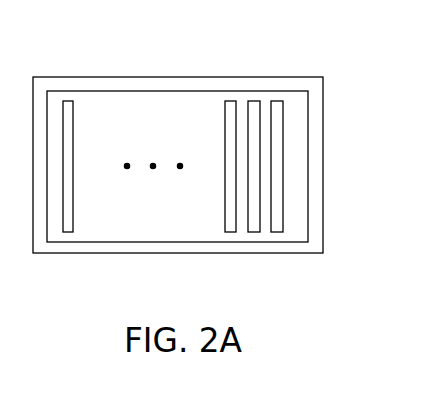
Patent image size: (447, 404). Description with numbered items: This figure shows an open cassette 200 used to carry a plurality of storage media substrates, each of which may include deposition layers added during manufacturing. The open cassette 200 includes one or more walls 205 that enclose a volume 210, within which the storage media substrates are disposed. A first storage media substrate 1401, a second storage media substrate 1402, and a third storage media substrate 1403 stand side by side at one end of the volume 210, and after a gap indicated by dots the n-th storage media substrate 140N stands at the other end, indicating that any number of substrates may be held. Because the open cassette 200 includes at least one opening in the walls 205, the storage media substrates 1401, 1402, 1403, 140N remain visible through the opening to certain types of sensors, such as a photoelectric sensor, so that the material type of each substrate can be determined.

The open cassette 200 is at (274, 44).
The walls 205 is at (320, 154).
The volume 210 is at (138, 110).
The storage media substrate 140N is at (71, 242).
The storage media substrate 1403 is at (228, 242).
The storage media substrate 1402 is at (260, 242).
The storage media substrate 1401 is at (286, 242).